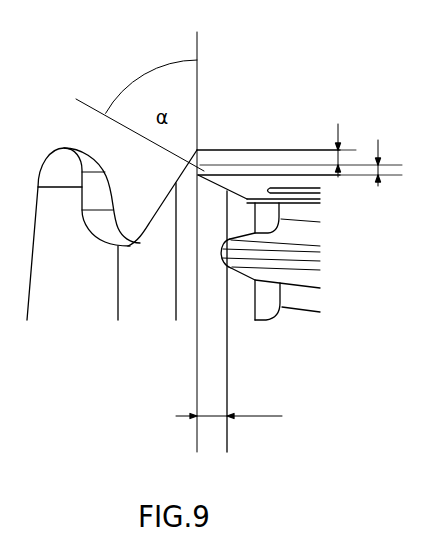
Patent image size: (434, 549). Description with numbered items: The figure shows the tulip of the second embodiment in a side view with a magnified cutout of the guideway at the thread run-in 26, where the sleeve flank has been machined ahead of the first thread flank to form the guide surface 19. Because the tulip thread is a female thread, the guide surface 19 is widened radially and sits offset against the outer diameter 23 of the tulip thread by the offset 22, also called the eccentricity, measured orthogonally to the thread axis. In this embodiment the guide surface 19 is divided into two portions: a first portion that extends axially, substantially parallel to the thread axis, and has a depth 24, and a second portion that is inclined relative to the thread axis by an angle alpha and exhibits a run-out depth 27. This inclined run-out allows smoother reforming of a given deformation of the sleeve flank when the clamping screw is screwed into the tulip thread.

The guide surface 19 is at (238, 157).
The offset 22 is at (258, 416).
The outer diameter 23 is at (228, 352).
The depth 24 is at (338, 124).
The thread run-in 26 is at (209, 157).
The run-out depth 27 is at (378, 144).